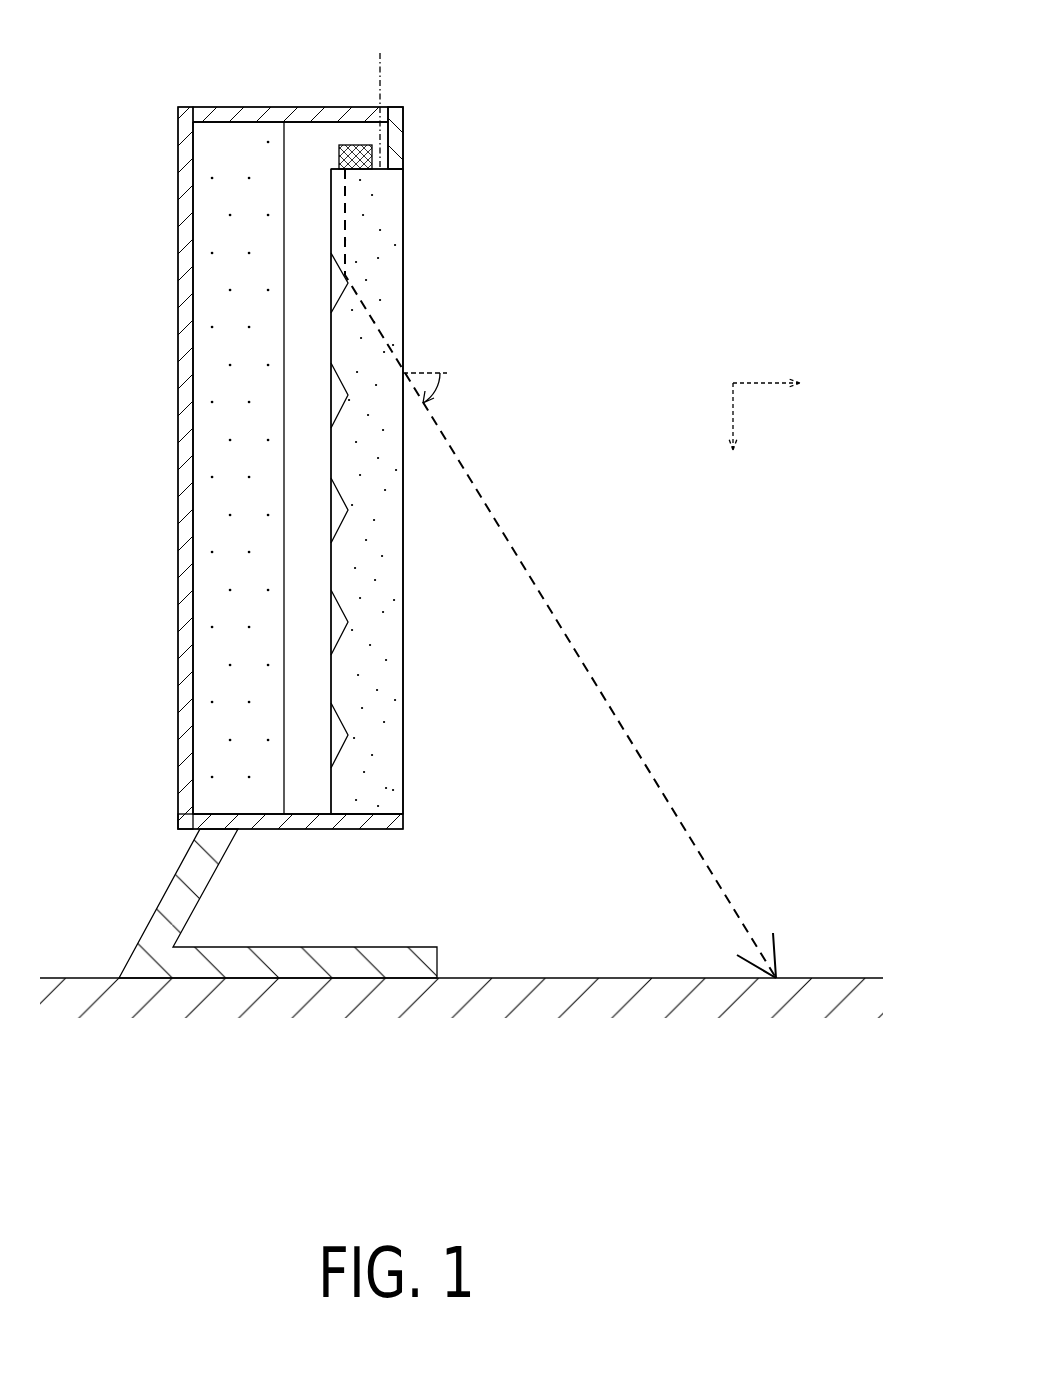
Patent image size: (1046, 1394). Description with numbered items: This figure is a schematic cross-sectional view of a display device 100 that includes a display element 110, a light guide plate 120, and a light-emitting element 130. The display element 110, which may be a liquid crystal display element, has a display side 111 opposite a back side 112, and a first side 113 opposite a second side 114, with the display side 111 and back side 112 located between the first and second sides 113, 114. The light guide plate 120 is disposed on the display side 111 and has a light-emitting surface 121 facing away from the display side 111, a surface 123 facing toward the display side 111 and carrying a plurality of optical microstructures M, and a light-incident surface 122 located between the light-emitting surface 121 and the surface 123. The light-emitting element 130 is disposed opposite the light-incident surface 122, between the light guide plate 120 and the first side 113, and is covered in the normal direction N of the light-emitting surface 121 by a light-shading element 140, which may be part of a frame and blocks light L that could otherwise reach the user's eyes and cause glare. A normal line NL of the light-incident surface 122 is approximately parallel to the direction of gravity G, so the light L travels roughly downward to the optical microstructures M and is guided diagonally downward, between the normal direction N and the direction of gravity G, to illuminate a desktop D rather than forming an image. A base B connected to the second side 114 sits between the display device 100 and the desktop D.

The display device 100 is at (178, 138).
The display element 110 is at (217, 222).
The display side 111 is at (274, 556).
The back side 112 is at (205, 450).
The first side 113 is at (236, 134).
The second side 114 is at (244, 804).
The light guide plate 120 is at (380, 227).
The light-emitting surface 121 is at (417, 299).
The light-incident surface 122 is at (396, 178).
The surface 123 is at (345, 581).
The light-emitting element 130 is at (362, 135).
The light-shading element 140 is at (400, 133).
The normal line NL is at (388, 62).
The light L is at (624, 727).
The angle Y is at (429, 393).
The optical microstructures M is at (333, 392).
The normal direction N is at (775, 386).
The direction of gravity G is at (734, 433).
The base B is at (187, 895).
The desktop D is at (843, 964).